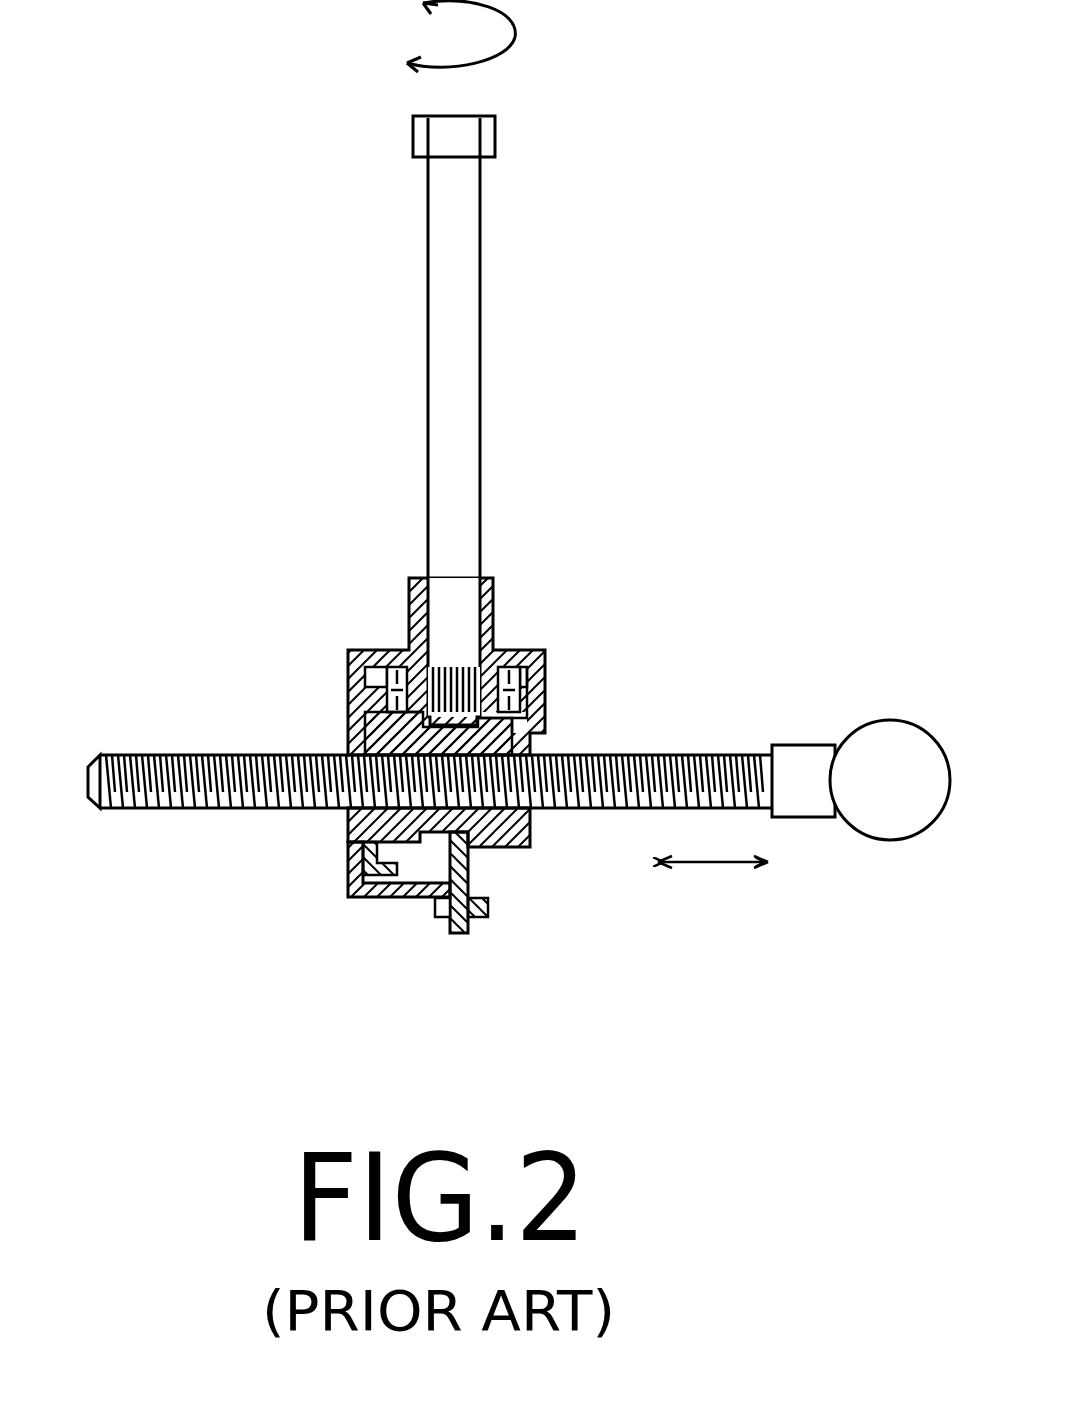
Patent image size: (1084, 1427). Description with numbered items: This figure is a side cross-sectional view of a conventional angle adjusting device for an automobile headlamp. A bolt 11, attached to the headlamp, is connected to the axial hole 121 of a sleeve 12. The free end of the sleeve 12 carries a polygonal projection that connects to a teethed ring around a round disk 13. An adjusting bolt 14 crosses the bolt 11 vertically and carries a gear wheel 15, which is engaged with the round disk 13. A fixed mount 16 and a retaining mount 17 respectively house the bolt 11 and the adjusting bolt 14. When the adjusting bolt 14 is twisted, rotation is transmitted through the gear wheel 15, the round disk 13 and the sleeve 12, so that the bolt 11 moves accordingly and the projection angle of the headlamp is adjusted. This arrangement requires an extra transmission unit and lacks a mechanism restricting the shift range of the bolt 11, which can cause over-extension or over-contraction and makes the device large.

The bolt 11 is at (690, 770).
The sleeve 12 is at (353, 820).
The axial hole 121 is at (372, 747).
The round disk 13 is at (372, 693).
The adjusting bolt 14 is at (465, 403).
The gear wheel 15 is at (500, 667).
The fixed mount 16 is at (400, 898).
The retaining mount 17 is at (470, 867).